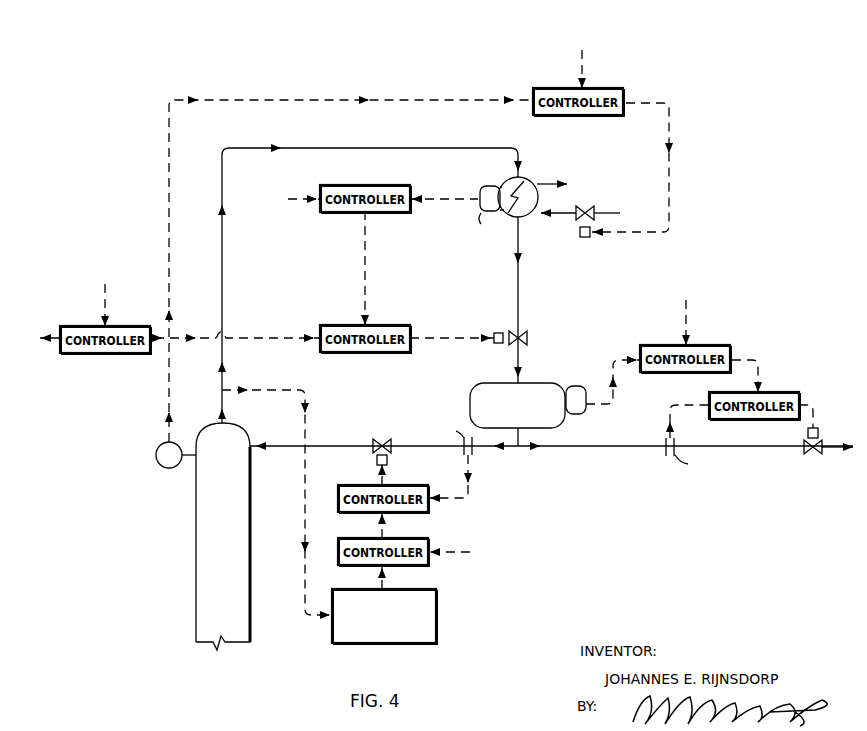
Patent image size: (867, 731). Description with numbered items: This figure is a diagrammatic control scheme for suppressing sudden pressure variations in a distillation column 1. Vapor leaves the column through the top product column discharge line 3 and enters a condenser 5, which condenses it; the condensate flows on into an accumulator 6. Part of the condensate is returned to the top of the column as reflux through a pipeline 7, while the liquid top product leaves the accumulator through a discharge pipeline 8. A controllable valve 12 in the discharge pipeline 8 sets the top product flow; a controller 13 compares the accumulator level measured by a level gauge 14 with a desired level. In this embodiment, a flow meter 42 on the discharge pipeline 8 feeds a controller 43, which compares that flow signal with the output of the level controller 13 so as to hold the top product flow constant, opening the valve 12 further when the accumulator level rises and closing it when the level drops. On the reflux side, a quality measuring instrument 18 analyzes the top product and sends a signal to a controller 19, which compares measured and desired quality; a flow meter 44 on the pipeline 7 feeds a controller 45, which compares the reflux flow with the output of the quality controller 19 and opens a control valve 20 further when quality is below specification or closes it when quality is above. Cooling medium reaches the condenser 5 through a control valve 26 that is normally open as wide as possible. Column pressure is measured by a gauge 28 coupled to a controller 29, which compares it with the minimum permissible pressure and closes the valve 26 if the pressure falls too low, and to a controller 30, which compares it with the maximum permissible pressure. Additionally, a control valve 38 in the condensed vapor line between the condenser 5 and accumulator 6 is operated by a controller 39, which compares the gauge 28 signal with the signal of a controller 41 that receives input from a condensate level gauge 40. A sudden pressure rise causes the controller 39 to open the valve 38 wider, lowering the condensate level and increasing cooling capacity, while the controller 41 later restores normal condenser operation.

The column 1 is at (229, 551).
The top product column discharge line 3 is at (222, 248).
The condenser 5 is at (521, 181).
The accumulator 6 is at (529, 383).
The pipeline 7 is at (326, 446).
The discharge pipeline 8 is at (832, 434).
The controllable valve 12 is at (806, 452).
The controller 13 is at (712, 335).
The level gauge 14 is at (590, 381).
The quality measuring instrument 18 is at (436, 640).
The controller 19 is at (429, 565).
The control valve 20 is at (376, 440).
The control valve 26 is at (583, 199).
The gauge 28 is at (157, 468).
The controller 29 is at (597, 88).
The controller 30 is at (117, 326).
The control valve 38 is at (524, 344).
The controller 39 is at (378, 325).
The condensate level gauge 40 is at (482, 190).
The controller 41 is at (372, 185).
The flow meter 42 is at (665, 455).
The controller 43 is at (772, 392).
The flow meter 44 is at (472, 452).
The controller 45 is at (429, 509).